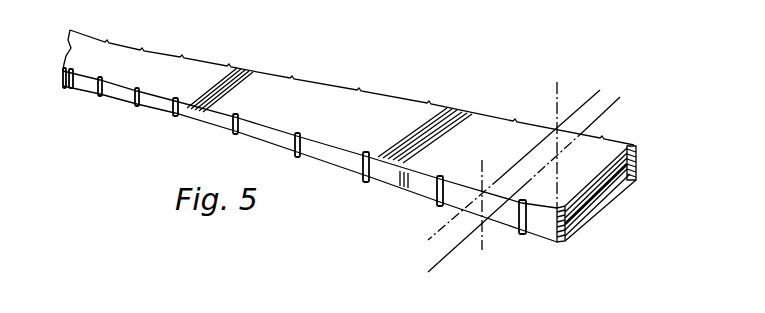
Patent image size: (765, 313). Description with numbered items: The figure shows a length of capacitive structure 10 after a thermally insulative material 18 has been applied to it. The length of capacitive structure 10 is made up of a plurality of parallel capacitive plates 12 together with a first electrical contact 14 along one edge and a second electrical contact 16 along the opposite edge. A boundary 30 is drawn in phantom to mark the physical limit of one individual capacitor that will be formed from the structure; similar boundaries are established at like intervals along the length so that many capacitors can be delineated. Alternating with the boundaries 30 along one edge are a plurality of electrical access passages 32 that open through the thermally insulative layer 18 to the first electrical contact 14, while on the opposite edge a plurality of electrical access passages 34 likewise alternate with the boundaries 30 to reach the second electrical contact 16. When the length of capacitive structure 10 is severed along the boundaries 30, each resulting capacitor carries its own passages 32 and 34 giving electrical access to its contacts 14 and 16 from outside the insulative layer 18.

The length of capacitive structure 10 is at (503, 57).
The parallel capacitive plates 12 is at (608, 192).
The first electrical contact 14 is at (564, 242).
The second electrical contact 16 is at (638, 162).
The thermally insulative material 18 is at (327, 96).
The boundary 30 is at (470, 238).
The electrical access passages 32 is at (365, 182).
The electrical access passages 34 is at (430, 108).